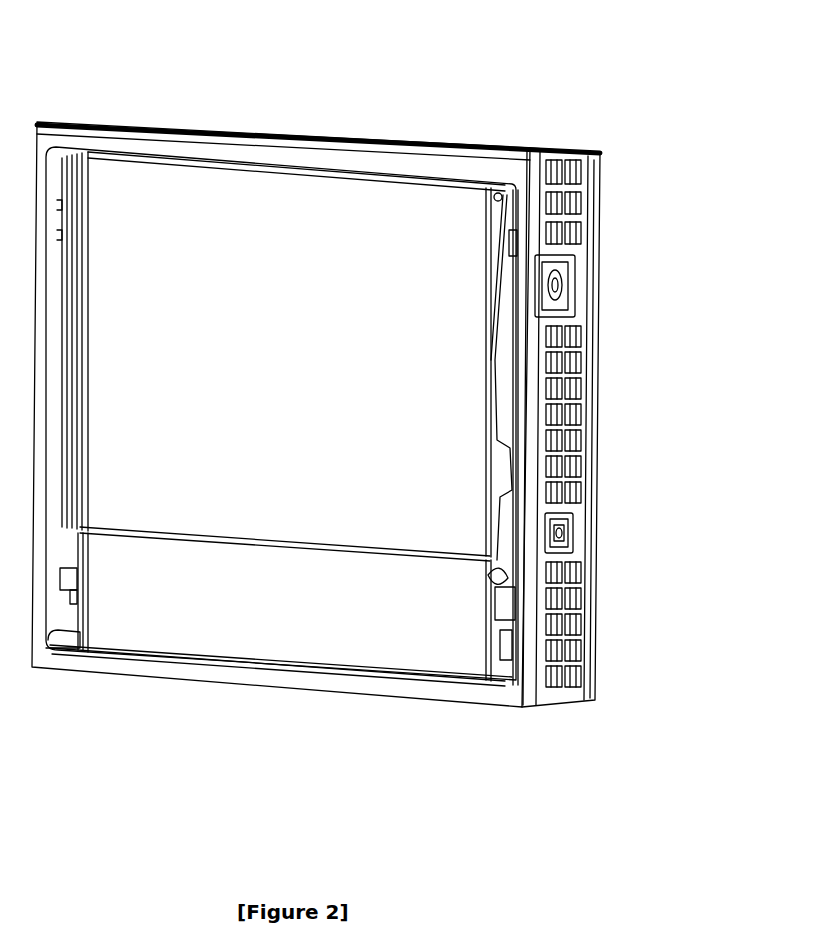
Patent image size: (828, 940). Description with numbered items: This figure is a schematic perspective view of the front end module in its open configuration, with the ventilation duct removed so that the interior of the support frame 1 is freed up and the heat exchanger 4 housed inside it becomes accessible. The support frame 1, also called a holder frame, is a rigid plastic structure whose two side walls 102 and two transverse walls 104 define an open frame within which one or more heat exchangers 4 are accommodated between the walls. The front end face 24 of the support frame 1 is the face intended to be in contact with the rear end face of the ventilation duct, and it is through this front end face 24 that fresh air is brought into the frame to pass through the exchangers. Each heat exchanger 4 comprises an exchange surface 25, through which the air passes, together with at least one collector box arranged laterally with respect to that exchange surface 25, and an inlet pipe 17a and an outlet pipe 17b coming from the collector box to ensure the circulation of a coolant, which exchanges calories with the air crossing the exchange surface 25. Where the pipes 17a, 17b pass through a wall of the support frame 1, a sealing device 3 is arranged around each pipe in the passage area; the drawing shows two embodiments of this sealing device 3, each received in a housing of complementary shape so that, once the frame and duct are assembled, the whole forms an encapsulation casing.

The support frame 1 is at (570, 183).
The sealing device 3 is at (563, 303).
The heat exchanger 4 is at (183, 232).
The inlet pipe 17a is at (570, 283).
The outlet pipe 17b is at (567, 533).
The front end face 24 is at (515, 312).
The exchange surface 25 is at (127, 620).
The side wall 102 is at (582, 665).
The transverse wall 104 is at (262, 124).